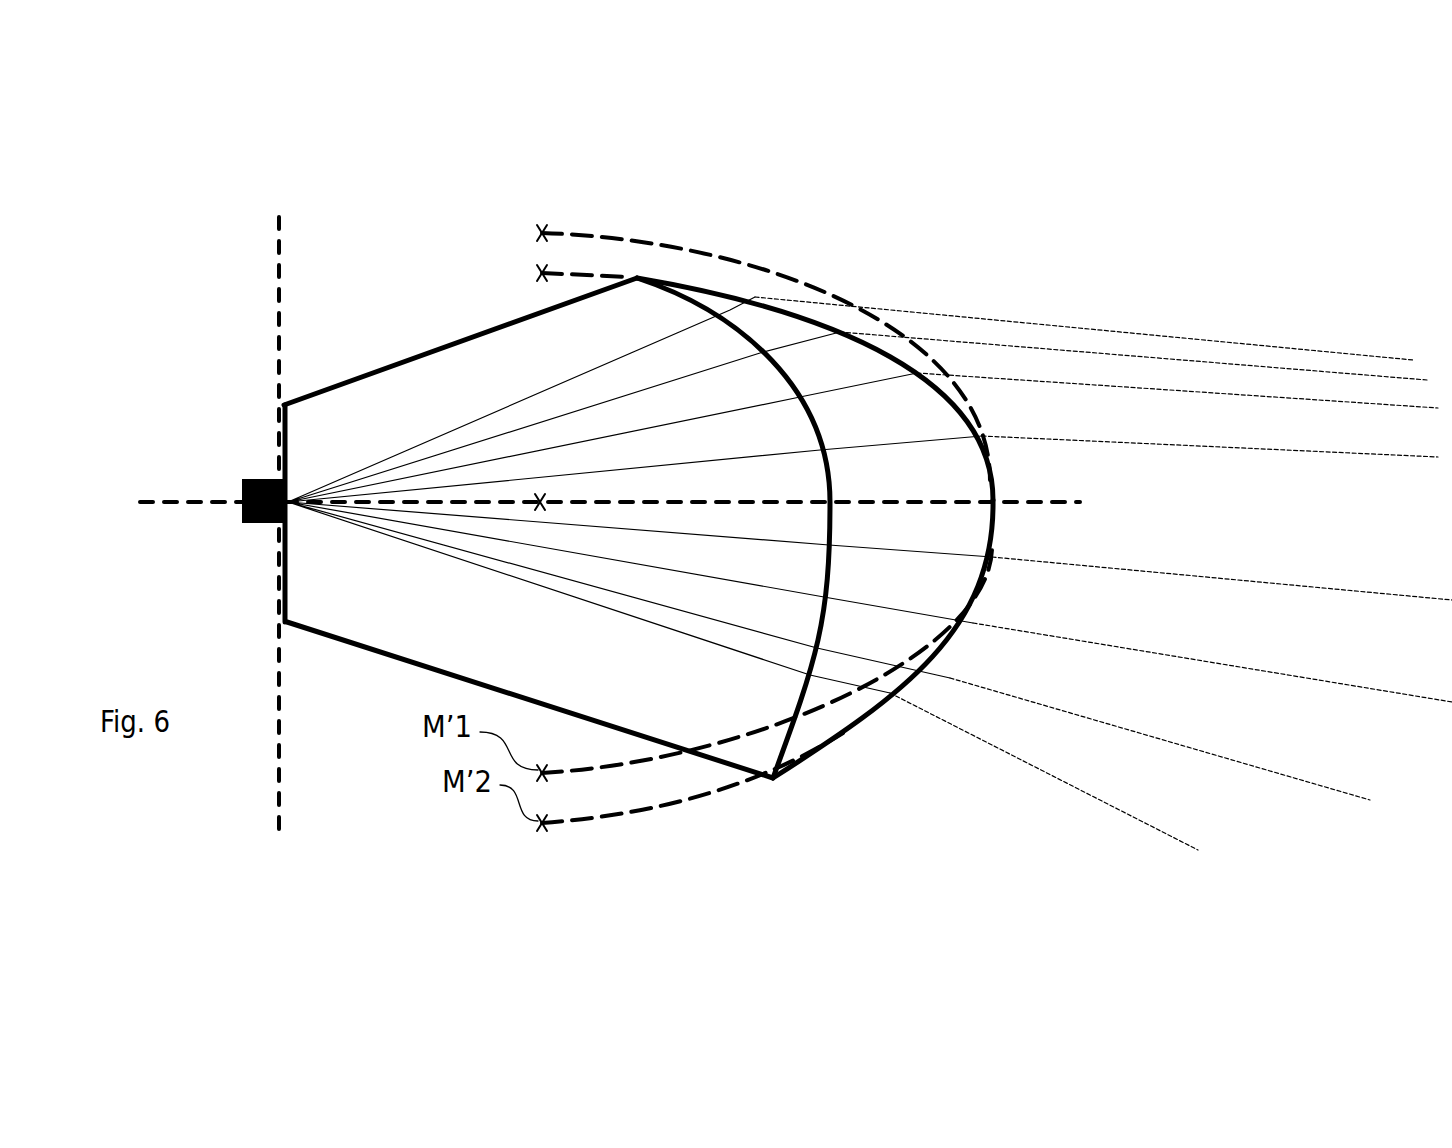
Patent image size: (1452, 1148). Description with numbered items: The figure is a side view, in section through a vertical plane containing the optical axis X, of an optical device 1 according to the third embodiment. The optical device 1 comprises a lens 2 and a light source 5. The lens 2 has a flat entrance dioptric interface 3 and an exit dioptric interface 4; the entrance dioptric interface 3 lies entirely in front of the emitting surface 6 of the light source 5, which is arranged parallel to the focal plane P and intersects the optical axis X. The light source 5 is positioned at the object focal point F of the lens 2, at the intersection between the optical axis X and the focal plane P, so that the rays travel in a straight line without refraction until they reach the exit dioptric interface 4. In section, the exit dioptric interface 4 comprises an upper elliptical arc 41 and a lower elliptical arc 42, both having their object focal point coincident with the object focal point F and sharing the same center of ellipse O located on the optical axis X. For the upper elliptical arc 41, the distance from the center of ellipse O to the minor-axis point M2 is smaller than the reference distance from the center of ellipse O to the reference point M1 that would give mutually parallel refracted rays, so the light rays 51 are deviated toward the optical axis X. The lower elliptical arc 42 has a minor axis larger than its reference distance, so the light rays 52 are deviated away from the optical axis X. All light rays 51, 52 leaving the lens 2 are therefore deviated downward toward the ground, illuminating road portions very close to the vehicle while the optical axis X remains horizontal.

The optical device 1 is at (588, 463).
The lens 2 is at (395, 362).
The entrance dioptric interface 3 is at (277, 422).
The exit dioptric interface 4 is at (722, 290).
The upper elliptical arc 41 is at (893, 348).
The lower elliptical arc 42 is at (864, 733).
The light source 5 is at (242, 498).
The emitting surface 6 is at (292, 512).
The light rays 51 is at (1156, 338).
The light rays 52 is at (1157, 832).
The focal plane P is at (277, 248).
The optical axis X is at (1053, 498).
The object focal point F is at (291, 500).
The center of ellipse O is at (553, 521).
The reference minor-axis point M1 is at (546, 228).
The minor-axis point of upper elliptical arc M2 is at (536, 276).